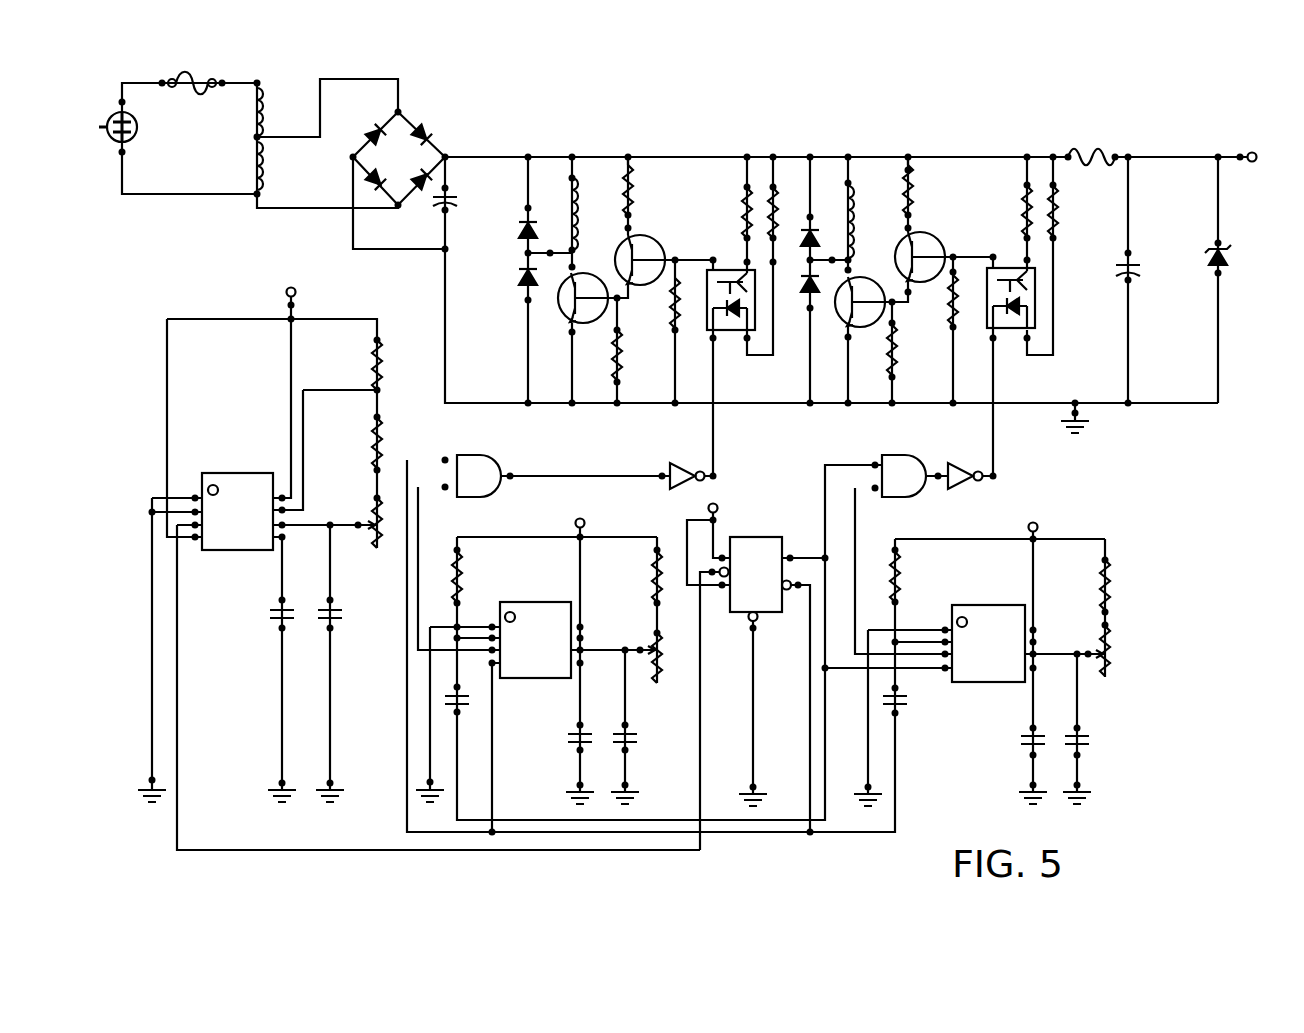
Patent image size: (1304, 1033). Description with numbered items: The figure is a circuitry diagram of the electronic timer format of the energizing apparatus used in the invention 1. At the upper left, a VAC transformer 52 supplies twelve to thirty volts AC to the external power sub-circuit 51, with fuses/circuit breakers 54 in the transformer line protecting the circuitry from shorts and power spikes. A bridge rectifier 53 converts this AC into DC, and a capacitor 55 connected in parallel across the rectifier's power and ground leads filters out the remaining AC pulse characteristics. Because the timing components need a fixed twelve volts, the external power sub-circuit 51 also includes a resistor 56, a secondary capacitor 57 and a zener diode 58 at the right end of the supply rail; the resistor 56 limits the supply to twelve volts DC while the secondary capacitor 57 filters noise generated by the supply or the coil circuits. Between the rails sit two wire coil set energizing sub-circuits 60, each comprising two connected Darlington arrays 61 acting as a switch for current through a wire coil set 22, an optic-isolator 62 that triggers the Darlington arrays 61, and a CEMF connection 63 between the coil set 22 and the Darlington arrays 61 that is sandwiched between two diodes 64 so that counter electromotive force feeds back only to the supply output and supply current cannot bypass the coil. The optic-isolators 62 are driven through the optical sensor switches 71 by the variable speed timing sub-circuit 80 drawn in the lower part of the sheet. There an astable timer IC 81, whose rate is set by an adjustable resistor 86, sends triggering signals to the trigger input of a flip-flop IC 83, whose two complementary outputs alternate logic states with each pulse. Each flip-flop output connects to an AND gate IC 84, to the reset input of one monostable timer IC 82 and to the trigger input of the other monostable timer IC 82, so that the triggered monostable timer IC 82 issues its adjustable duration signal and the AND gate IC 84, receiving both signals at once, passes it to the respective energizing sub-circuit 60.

The invention 1 is at (1130, 453).
The wire coil sets 22 is at (580, 214).
The external power sub-circuit 51 is at (400, 69).
The VAC transformer 52 is at (265, 70).
The bridge rectifier 53 is at (415, 113).
The fuses/circuit breakers 54 is at (190, 76).
The capacitor 55 is at (450, 207).
The resistor 56 is at (1098, 152).
The secondary capacitor 57 is at (1140, 266).
The zener diode 58 is at (1228, 253).
The wire coil set energizing sub-circuit 60 is at (637, 130).
The Darlington arrays 61 is at (645, 236).
The optic-isolator 62 is at (735, 333).
The CEMF connection 63 is at (550, 250).
The diodes 64 is at (520, 223).
The optical sensor switches 71 is at (680, 489).
The variable speed timing sub-circuit 80 is at (363, 853).
The astable 555 IC 81 is at (250, 473).
The monostable 555 IC 82 is at (992, 682).
The flip-flop IC 83 is at (770, 537).
The AND gate IC 84 is at (498, 457).
The adjustable resistor 86 is at (371, 520).